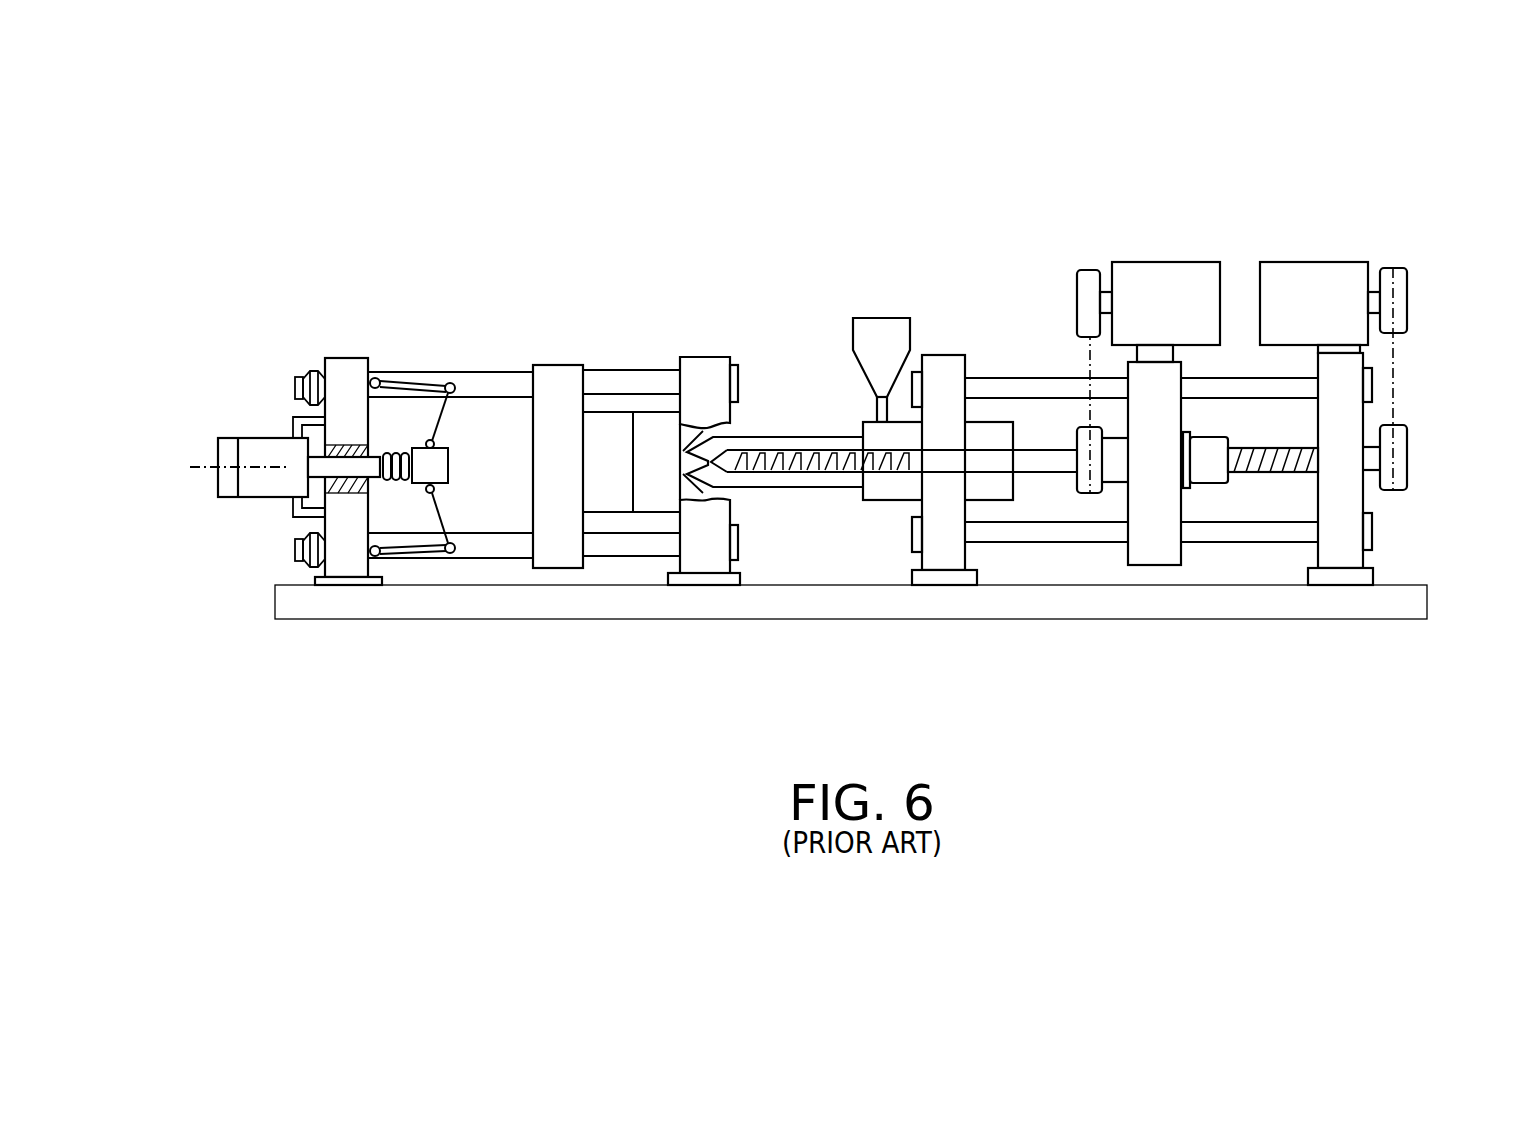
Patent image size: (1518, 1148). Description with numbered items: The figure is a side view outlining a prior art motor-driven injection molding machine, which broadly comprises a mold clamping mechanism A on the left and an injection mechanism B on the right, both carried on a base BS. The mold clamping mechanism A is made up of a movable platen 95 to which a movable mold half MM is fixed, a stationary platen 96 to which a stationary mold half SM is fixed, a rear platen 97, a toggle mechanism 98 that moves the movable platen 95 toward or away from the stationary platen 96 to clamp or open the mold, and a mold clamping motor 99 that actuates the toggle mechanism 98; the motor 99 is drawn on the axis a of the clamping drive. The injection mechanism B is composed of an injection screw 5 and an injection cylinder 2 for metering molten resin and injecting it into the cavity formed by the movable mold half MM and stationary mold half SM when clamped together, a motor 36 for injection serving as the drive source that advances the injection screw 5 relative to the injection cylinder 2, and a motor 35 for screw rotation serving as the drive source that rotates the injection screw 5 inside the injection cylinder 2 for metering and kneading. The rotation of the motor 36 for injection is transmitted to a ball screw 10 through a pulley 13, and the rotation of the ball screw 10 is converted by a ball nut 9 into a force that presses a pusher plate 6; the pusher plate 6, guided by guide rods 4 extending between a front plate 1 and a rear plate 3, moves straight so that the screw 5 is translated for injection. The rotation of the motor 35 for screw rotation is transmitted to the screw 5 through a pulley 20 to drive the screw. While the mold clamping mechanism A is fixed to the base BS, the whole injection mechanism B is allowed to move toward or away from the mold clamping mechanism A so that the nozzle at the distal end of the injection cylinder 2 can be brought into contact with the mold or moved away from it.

The front plate of injection unit 1 is at (946, 377).
The injection cylinder 2 is at (778, 443).
The rear plate 3 is at (1343, 510).
The guide rods 4 is at (1260, 388).
The injection screw 5 is at (823, 477).
The pusher plate 6 is at (1152, 543).
The ball nut 9 is at (1215, 462).
The ball screw 10 is at (1267, 477).
The pulley 13 is at (1403, 465).
The pulley 20 is at (1080, 493).
The motor for screw rotation 35 is at (1168, 287).
The motor for injection 36 is at (1328, 287).
The movable platen 95 is at (555, 370).
The stationary platen 96 is at (700, 373).
The rear platen 97 is at (343, 360).
The toggle mechanism 98 is at (416, 421).
The mold clamping motor 99 is at (275, 438).
The movable mold half MM is at (602, 437).
The stationary mold half SM is at (652, 483).
The base BS is at (1410, 597).
The mold clamping mechanism A is at (491, 298).
The injection mechanism B is at (1230, 502).
The axis a is at (228, 468).